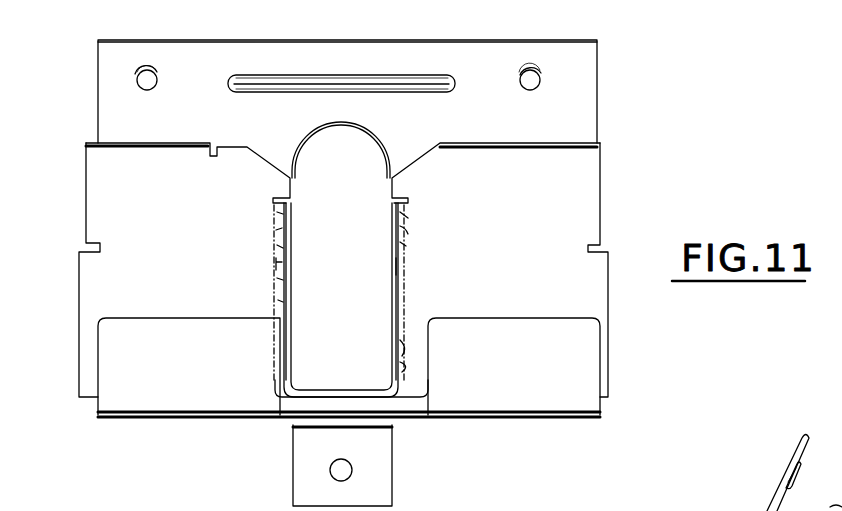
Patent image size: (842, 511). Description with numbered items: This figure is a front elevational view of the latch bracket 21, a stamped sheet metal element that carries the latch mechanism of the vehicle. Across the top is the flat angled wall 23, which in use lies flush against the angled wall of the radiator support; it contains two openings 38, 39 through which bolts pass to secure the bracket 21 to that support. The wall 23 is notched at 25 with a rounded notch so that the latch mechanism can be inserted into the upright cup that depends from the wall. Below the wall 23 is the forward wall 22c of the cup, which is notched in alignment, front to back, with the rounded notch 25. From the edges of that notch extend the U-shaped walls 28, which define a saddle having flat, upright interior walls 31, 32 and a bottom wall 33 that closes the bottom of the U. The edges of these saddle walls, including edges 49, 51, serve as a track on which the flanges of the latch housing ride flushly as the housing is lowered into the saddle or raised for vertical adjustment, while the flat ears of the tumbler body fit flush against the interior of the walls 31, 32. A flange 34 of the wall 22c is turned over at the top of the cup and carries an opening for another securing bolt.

The latch bracket 21 is at (482, 27).
The forward wall 22c is at (582, 191).
The wall 23 is at (580, 72).
The notch 25 is at (352, 128).
The U-shaped walls 28 is at (398, 266).
The interior wall 31 is at (292, 290).
The interior wall 32 is at (347, 300).
The bottom wall 33 is at (329, 392).
The flange 34 is at (686, 510).
The opening 38 is at (157, 78).
The opening 39 is at (522, 75).
The edge 49 is at (284, 280).
The edge 51 is at (400, 244).